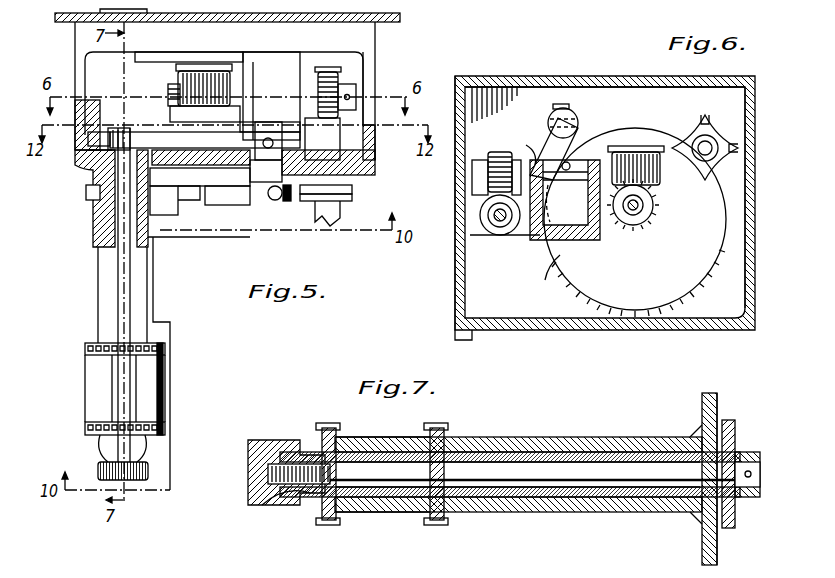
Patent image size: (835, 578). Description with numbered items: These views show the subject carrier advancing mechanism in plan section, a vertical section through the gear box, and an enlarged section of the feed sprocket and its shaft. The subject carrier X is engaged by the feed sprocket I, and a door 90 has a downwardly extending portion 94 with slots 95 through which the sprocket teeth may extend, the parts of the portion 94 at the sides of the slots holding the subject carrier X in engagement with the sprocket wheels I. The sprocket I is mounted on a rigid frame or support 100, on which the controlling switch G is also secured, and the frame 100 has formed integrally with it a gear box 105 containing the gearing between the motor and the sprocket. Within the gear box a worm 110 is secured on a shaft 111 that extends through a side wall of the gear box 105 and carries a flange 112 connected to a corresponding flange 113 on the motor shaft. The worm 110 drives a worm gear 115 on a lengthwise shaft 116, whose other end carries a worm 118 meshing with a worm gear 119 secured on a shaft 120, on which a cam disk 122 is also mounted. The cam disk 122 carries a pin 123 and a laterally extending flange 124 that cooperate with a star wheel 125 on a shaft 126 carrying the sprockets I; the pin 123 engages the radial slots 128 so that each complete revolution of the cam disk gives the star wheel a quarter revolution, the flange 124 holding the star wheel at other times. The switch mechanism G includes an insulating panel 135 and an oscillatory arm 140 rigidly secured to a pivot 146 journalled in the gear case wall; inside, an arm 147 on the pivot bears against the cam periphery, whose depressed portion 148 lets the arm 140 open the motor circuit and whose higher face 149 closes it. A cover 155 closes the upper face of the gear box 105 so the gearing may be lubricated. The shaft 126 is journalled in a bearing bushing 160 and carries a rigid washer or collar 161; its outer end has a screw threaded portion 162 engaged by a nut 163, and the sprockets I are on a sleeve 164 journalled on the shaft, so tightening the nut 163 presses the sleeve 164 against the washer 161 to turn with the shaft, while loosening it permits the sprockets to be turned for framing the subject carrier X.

In FIG. 5, the door 90 is at (165, 343).
In FIG. 5, the downwardly extending portion 94 is at (165, 440).
In FIG. 5, the slots 95 is at (165, 352).
In FIG. 5, the frame or support 100 is at (95, 178).
In FIG. 6, the frame or support 100 is at (457, 292).
In FIG. 7, the frame or support 100 is at (702, 545).
In FIG. 5, the gear box 105 is at (372, 57).
In FIG. 6, the gear box 105 is at (750, 300).
In FIG. 7, the gear box 105 is at (738, 479).
In FIG. 6, the worm 110 is at (492, 238).
In FIG. 6, the shaft 111 is at (506, 230).
In FIG. 5, the flange 112 is at (352, 190).
In FIG. 5, the flange 113 is at (352, 198).
In FIG. 5, the worm gear 115 is at (340, 80).
In FIG. 6, the worm gear 115 is at (500, 152).
In FIG. 5, the shaft 116 is at (260, 95).
In FIG. 6, the shaft 116 is at (578, 168).
In FIG. 5, the worm 118 is at (180, 82).
In FIG. 6, the worm 118 is at (636, 158).
In FIG. 5, the worm gear 119 is at (170, 97).
In FIG. 6, the worm gear 119 is at (655, 205).
In FIG. 5, the shaft 120 is at (198, 72).
In FIG. 6, the shaft 120 is at (633, 226).
In FIG. 5, the cam disk 122 is at (176, 132).
In FIG. 6, the cam disk 122 is at (635, 219).
In FIG. 6, the pin 123 is at (574, 152).
In FIG. 5, the laterally extending flange 124 is at (246, 136).
In FIG. 5, the star wheel 125 is at (92, 150).
In FIG. 6, the star wheel 125 is at (716, 141).
In FIG. 7, the star wheel 125 is at (735, 440).
In FIG. 5, the shaft 126 is at (120, 227).
In FIG. 6, the shaft 126 is at (712, 150).
In FIG. 7, the shaft 126 is at (604, 468).
In FIG. 5, the radial slots 128 is at (118, 140).
In FIG. 5, the insulating panel 135 is at (170, 190).
In FIG. 5, the oscillatory arm 140 is at (228, 205).
In FIG. 5, the pin or pivot 146 is at (266, 168).
In FIG. 6, the pin or pivot 146 is at (566, 110).
In FIG. 5, the arm 147 is at (280, 141).
In FIG. 6, the arm 147 is at (525, 145).
In FIG. 6, the recessed or depressed portion 148 is at (563, 265).
In FIG. 6, the higher face 149 is at (720, 240).
In FIG. 6, the cover 155 is at (515, 76).
In FIG. 7, the bearing bushing 160 is at (532, 455).
In FIG. 7, the washer or collar 161 is at (442, 437).
In FIG. 7, the screw threaded portion 162 is at (285, 463).
In FIG. 5, the nut 163 is at (148, 468).
In FIG. 7, the nut 163 is at (270, 505).
In FIG. 5, the sleeve 164 is at (118, 395).
In FIG. 7, the sleeve 164 is at (372, 497).
In FIG. 5, the controlling switch G is at (327, 216).
In FIG. 5, the feed sprocket I is at (95, 425).
In FIG. 7, the feed sprocket I is at (425, 432).
In FIG. 5, the subject carrier X is at (166, 383).